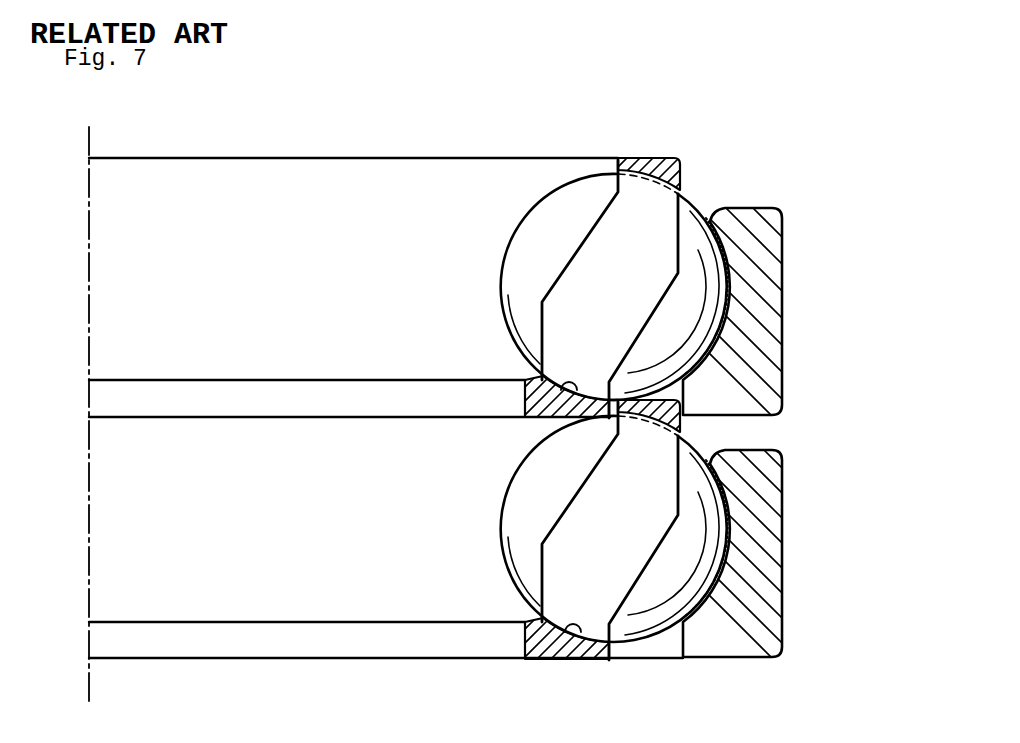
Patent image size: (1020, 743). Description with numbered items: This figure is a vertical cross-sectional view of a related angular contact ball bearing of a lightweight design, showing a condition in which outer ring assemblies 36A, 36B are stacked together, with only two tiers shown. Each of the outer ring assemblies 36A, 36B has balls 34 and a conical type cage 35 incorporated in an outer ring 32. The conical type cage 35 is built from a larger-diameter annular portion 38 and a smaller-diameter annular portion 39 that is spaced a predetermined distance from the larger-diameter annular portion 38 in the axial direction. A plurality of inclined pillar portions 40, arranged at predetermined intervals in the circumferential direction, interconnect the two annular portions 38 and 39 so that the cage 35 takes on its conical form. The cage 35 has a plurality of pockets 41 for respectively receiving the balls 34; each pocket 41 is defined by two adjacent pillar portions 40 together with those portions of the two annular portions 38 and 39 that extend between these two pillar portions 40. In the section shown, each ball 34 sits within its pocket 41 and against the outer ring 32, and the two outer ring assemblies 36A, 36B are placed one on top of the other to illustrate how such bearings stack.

The outer ring 32 is at (783, 382).
The balls 34 is at (693, 291).
The conical type cage 35 is at (593, 222).
The outer ring assembly 36A is at (803, 576).
The outer ring assembly 36B is at (800, 329).
The larger-diameter annular portion 38 is at (657, 160).
The smaller-diameter annular portion 39 is at (535, 378).
The inclined pillar portions 40 is at (580, 295).
The pockets 41 is at (533, 419).